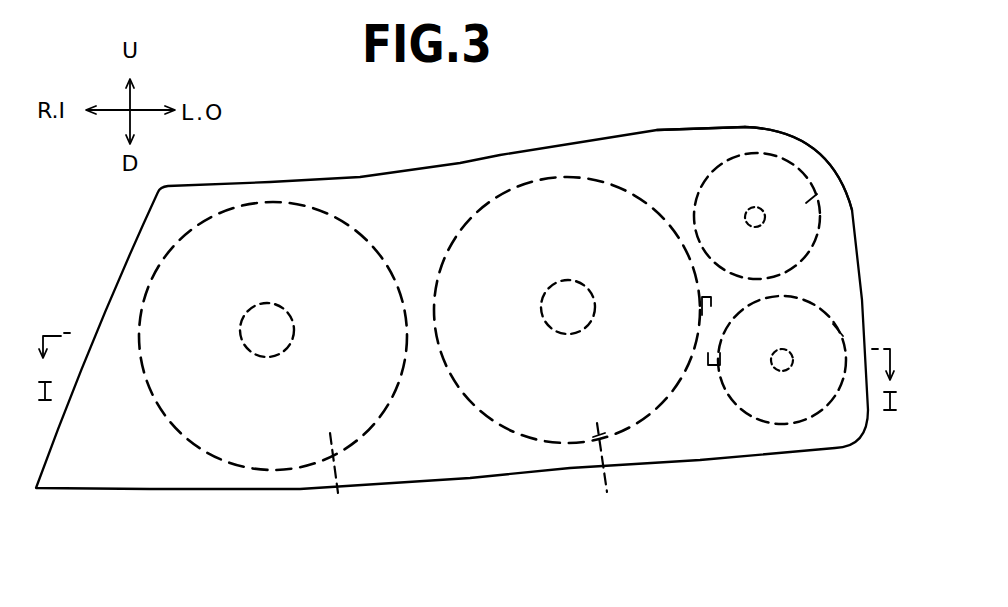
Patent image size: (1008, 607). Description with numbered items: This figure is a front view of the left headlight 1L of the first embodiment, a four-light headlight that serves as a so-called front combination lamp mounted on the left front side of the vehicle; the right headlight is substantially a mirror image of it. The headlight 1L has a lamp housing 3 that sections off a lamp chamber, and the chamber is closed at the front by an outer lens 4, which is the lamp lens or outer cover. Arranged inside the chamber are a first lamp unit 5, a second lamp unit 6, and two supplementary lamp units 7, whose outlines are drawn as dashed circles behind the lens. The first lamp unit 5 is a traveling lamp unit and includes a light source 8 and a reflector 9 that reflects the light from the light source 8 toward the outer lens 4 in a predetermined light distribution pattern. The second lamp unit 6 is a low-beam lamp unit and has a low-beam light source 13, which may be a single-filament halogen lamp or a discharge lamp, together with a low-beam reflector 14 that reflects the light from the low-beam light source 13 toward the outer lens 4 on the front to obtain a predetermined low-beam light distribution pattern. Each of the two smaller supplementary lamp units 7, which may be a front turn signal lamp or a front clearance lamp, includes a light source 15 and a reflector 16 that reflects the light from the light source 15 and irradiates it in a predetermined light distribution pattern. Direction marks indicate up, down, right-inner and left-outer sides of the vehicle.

The left headlight 1L is at (458, 153).
The lamp housing 3 is at (657, 130).
The outer lens 4 is at (798, 168).
The first lamp unit 5 is at (284, 196).
The second lamp unit 6 is at (501, 193).
The supplementary lamp unit 7 is at (769, 151).
The light source 8 is at (238, 332).
The reflector 9 is at (326, 528).
The low-beam light source 13 is at (550, 331).
The low-beam reflector 14 is at (602, 471).
The light source 15 is at (764, 207).
The reflector 16 is at (812, 200).